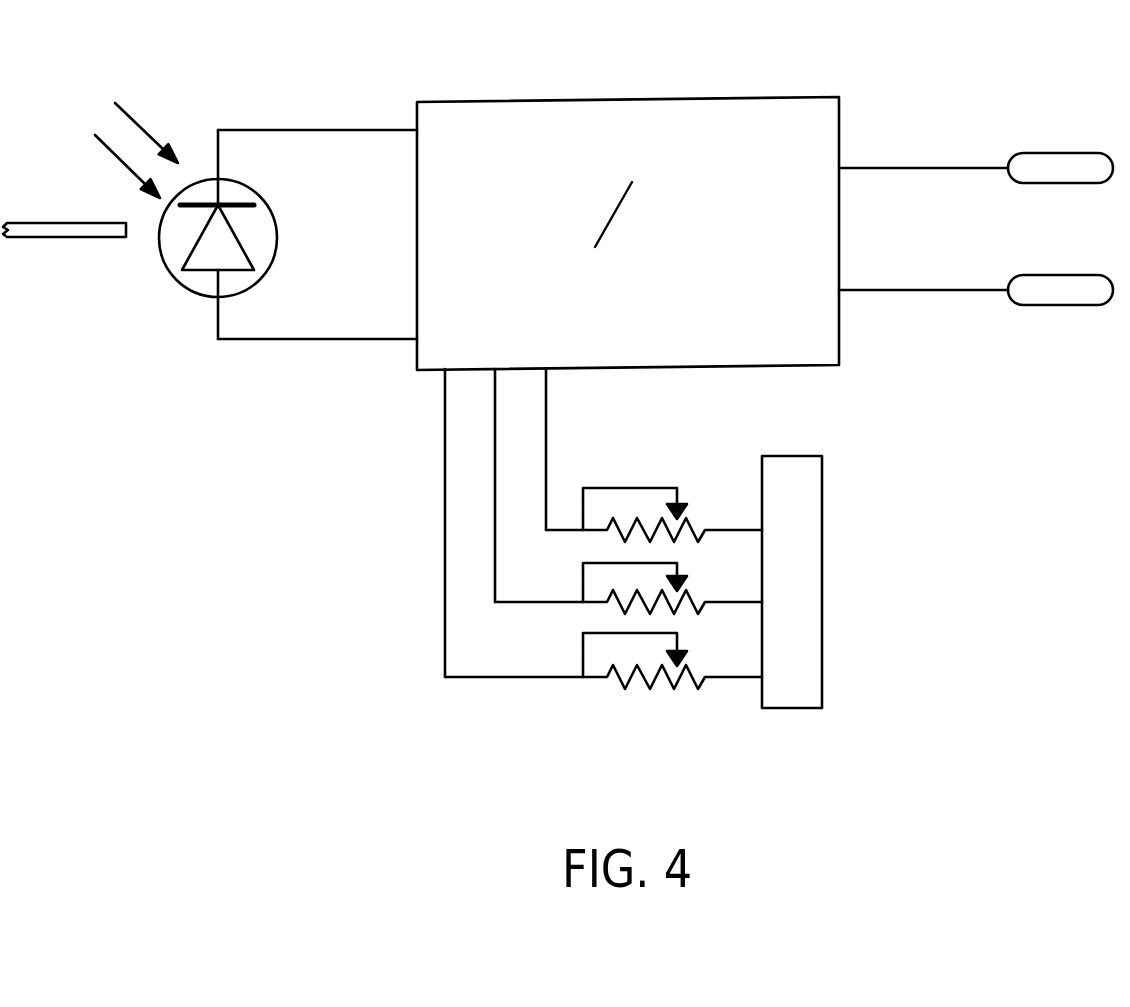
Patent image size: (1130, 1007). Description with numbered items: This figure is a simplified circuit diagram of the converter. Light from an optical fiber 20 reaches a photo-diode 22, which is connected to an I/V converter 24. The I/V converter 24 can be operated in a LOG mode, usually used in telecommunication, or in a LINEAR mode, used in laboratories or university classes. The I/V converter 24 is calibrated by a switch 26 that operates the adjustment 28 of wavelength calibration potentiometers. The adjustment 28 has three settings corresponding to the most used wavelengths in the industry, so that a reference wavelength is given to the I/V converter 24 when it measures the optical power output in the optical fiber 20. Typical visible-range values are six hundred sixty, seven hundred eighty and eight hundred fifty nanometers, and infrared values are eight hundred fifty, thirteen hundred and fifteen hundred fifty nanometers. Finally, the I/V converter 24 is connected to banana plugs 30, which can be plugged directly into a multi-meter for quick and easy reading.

The optical fiber 20 is at (95, 233).
The photo-diode 22 is at (207, 257).
The I/V converter 24 is at (628, 133).
The switch 26 is at (797, 595).
The adjustment 28 is at (643, 694).
The banana plugs 30 is at (1061, 132).